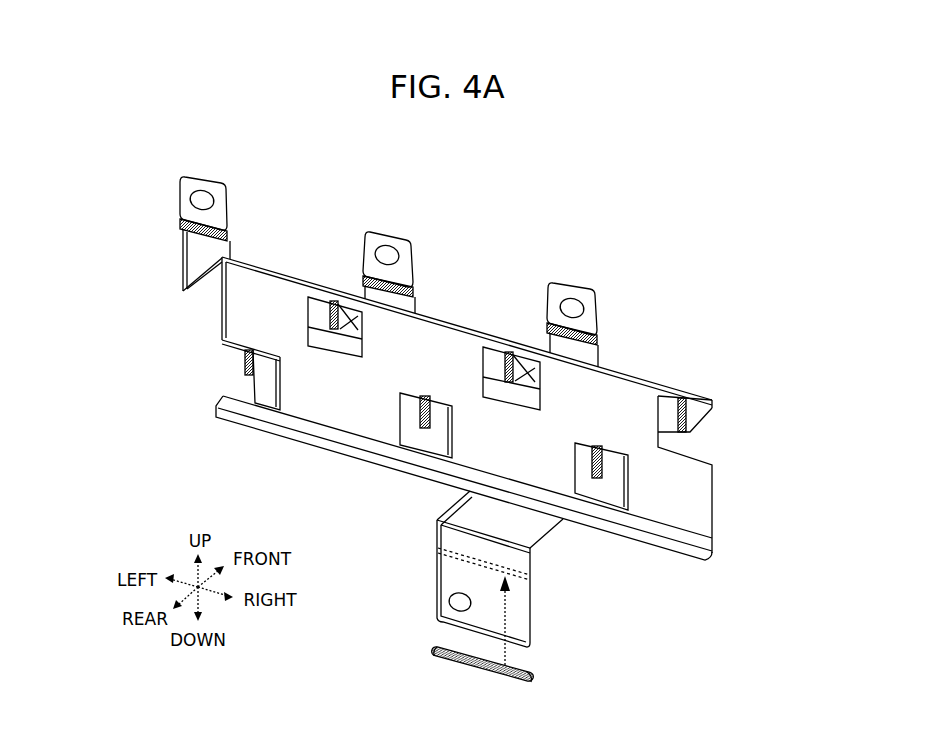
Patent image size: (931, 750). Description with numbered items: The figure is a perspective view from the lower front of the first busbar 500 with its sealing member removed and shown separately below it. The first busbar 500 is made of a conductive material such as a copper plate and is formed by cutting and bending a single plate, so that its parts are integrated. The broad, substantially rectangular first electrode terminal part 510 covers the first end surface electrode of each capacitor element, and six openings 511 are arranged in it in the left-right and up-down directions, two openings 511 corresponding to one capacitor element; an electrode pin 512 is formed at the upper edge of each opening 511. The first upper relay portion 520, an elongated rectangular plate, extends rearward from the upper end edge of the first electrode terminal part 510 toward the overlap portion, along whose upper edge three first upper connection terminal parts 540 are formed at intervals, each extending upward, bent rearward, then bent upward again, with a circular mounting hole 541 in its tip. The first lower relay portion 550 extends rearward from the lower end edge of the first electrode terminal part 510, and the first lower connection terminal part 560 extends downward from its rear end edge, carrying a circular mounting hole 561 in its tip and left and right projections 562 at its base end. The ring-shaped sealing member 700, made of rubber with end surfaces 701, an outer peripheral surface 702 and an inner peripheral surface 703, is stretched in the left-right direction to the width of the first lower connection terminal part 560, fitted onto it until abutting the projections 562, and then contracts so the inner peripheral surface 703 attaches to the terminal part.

The first busbar 500 is at (700, 358).
The first electrode terminal part 510 is at (448, 352).
The opening 511 is at (334, 357).
The electrode pin 512 is at (363, 336).
The first upper relay portion 520 is at (210, 285).
The first upper connection terminal part 540 is at (230, 203).
The mounting hole 541 is at (180, 190).
The first lower relay portion 550 is at (307, 445).
The first lower connection terminal part 560 is at (436, 583).
The mounting hole 561 is at (449, 605).
The projection 562 is at (437, 547).
The sealing member 700 is at (545, 679).
The end surface 701 is at (490, 677).
The outer peripheral surface 702 is at (518, 668).
The inner peripheral surface 703 is at (462, 668).